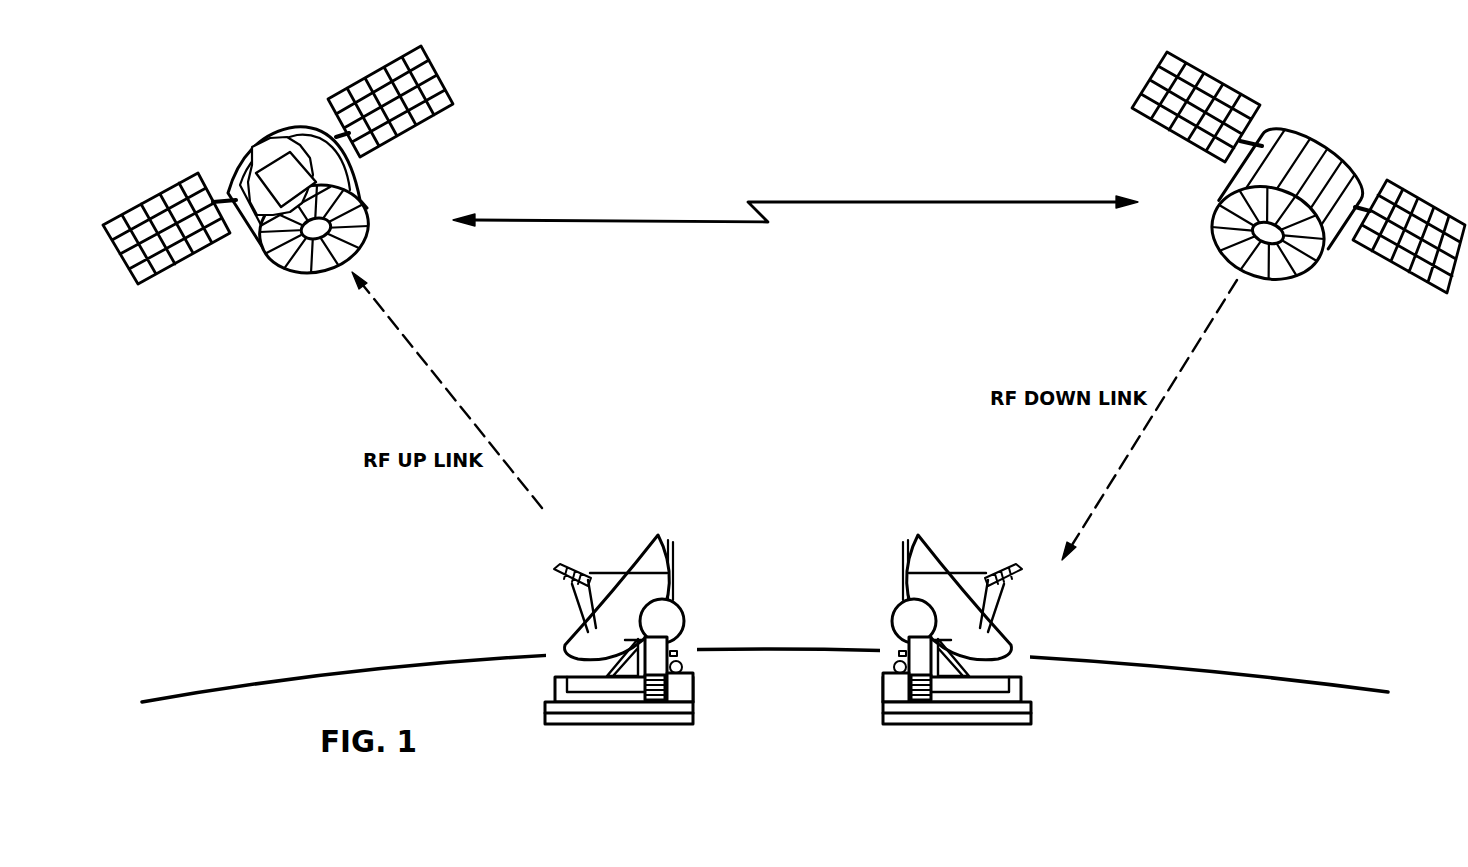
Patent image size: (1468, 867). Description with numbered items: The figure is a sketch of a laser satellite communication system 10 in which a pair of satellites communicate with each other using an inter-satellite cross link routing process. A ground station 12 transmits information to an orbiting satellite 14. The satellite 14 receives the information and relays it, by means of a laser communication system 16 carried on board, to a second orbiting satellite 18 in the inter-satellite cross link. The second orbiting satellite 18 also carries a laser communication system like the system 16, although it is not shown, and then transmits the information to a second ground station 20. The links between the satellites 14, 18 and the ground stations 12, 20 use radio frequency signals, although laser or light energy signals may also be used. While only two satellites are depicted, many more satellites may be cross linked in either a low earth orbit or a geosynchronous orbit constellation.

The laser satellite communication system 10 is at (181, 170).
The ground station 12 is at (670, 723).
The orbiting satellite 14 is at (368, 204).
The laser communication system 16 is at (273, 189).
The second orbiting satellite 18 is at (1317, 270).
The second ground station 20 is at (900, 723).